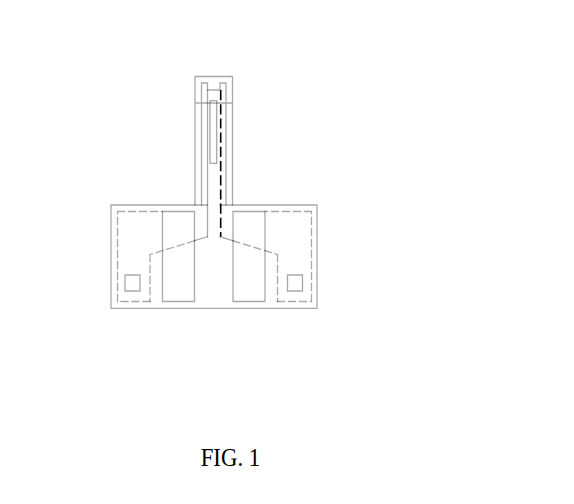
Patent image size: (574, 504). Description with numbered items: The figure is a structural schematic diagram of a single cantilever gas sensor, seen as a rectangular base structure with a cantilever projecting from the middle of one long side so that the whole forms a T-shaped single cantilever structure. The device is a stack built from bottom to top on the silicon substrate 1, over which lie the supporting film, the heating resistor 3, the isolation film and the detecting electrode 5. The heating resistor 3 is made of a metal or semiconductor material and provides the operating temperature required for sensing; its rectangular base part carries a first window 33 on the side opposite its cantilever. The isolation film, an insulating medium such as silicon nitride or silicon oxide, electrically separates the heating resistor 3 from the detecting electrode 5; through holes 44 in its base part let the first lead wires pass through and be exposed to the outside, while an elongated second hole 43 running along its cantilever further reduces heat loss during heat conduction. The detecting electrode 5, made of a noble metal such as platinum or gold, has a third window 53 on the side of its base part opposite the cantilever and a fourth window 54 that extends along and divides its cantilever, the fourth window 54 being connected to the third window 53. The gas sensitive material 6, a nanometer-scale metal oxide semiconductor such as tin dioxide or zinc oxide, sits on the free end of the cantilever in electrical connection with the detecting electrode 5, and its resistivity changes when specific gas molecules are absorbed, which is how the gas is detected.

The silicon substrate 1 is at (317, 246).
The heating resistor 3 is at (295, 242).
The detecting electrode 5 is at (247, 234).
The gas sensitive material 6 is at (228, 89).
The first window 33 is at (270, 290).
The second hole 43 is at (213, 142).
The through holes 44 is at (134, 287).
The third window 53 is at (213, 273).
The fourth window 54 is at (214, 218).